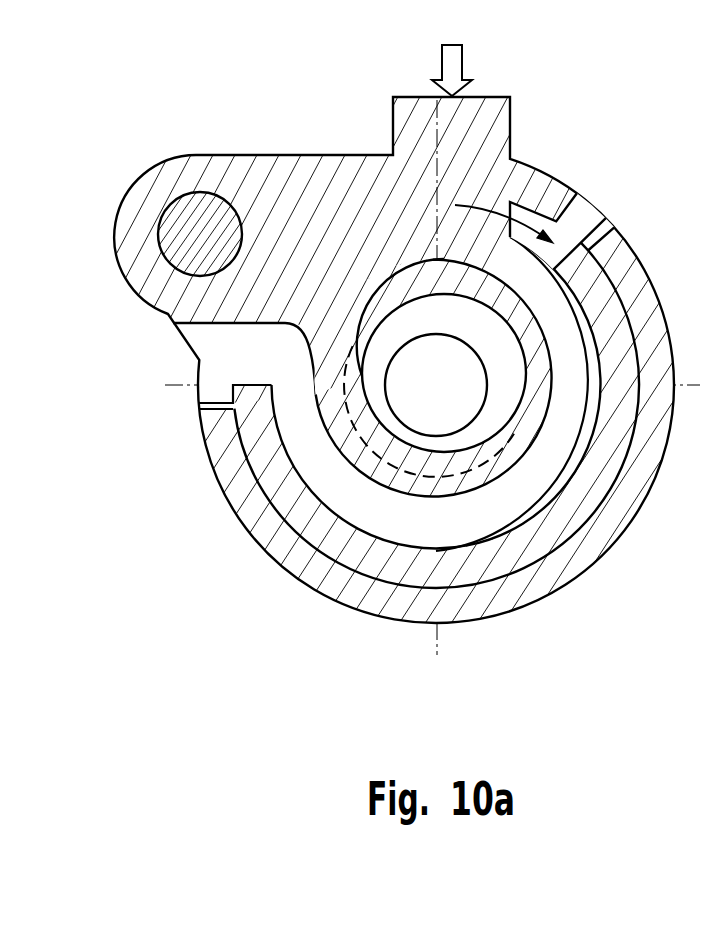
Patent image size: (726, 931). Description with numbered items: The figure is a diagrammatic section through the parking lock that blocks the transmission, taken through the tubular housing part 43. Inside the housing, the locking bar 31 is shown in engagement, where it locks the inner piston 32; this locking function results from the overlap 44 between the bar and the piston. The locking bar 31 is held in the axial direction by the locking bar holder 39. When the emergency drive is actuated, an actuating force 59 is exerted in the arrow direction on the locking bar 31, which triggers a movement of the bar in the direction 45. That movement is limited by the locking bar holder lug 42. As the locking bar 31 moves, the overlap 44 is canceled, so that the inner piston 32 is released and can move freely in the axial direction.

The locking bar 31 is at (300, 180).
The inner piston 32 is at (512, 405).
The locking bar holder 39 is at (531, 503).
The locking bar holder lug 42 is at (580, 258).
The tubular housing part 43 is at (624, 248).
The overlap 44 is at (392, 447).
The direction 45 is at (520, 218).
The actuating force 59 is at (463, 62).